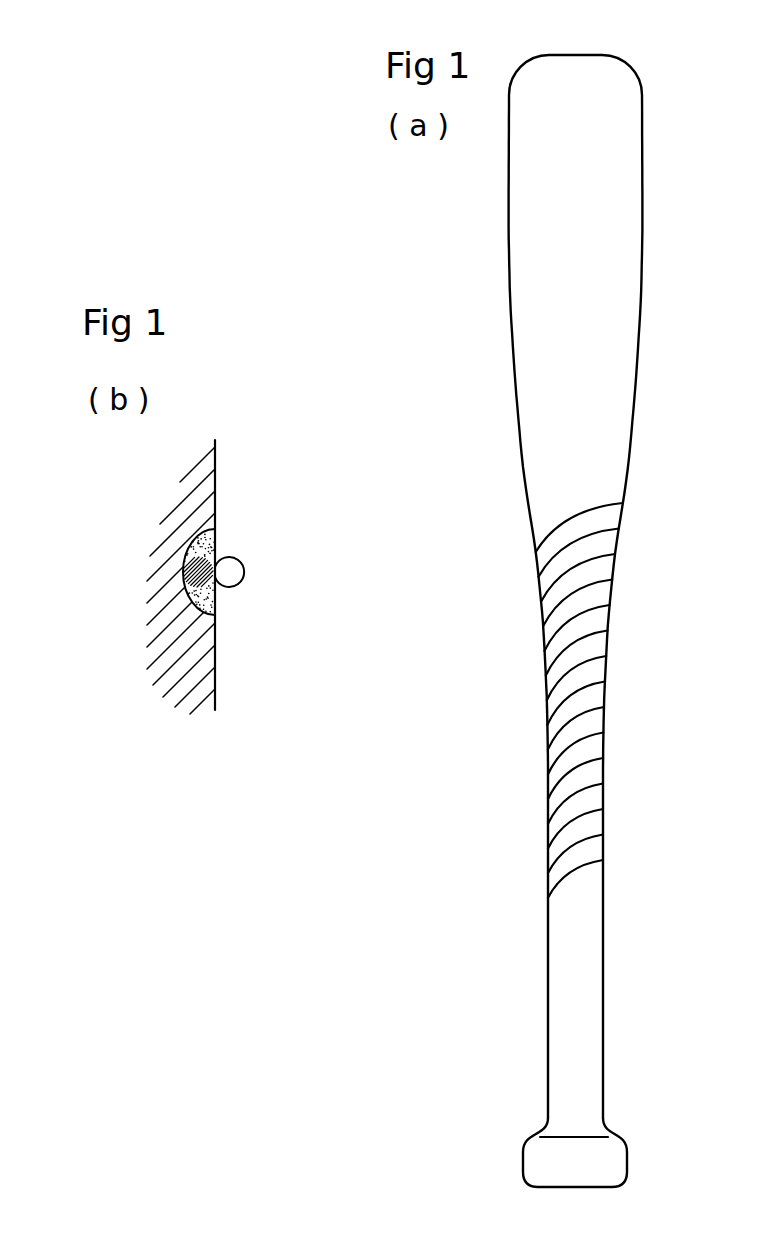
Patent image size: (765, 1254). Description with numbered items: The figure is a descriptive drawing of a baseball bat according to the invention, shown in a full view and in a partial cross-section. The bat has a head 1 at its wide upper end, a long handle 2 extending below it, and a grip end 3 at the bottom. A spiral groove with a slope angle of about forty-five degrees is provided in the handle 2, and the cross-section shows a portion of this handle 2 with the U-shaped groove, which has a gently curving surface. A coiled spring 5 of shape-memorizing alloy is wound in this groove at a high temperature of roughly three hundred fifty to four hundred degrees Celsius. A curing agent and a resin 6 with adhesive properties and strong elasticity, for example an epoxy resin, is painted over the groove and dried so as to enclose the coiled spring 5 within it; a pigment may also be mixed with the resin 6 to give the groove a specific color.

The head 1 is at (535, 457).
The handle 2 is at (555, 962).
The grip end 3 is at (533, 1153).
The coiled spring 5 is at (214, 574).
The resin 6 is at (215, 546).